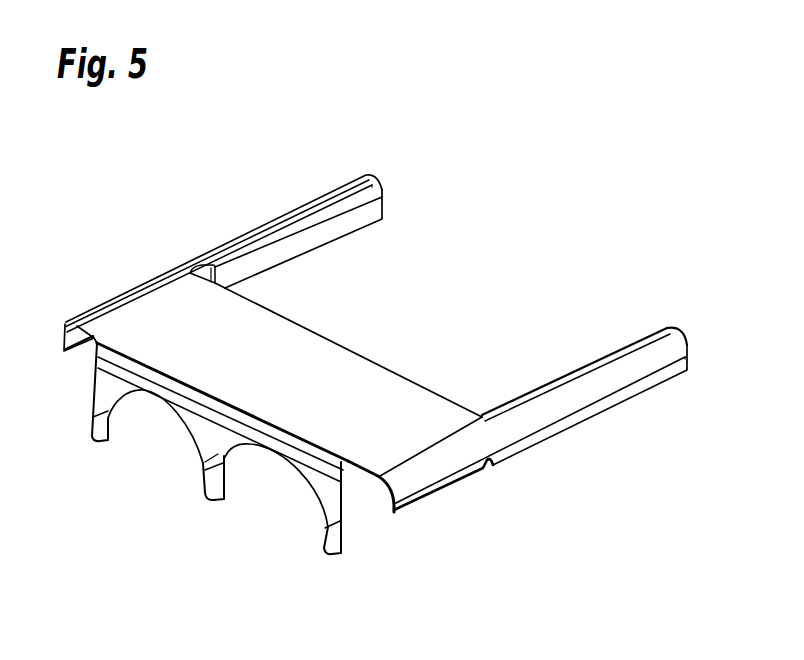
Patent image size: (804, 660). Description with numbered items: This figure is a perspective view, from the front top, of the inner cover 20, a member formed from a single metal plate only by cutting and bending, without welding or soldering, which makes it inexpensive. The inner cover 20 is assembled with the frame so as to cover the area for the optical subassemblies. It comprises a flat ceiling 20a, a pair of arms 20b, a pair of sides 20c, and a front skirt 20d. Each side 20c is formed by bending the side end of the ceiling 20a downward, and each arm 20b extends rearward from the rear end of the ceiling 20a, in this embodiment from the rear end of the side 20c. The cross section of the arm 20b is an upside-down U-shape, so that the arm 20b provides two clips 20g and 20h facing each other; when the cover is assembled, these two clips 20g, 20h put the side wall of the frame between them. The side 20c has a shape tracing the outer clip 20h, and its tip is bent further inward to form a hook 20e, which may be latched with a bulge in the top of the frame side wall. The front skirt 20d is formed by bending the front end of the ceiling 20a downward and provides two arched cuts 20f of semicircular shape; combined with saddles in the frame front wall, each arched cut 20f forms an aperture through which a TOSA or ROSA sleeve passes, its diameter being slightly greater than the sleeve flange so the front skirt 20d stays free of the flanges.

The inner cover 20 is at (487, 253).
The ceiling 20a is at (372, 380).
The arm 20b is at (321, 197).
The side 20c is at (63, 328).
The front skirt 20d is at (205, 464).
The hook 20e is at (78, 352).
The arched cut 20f is at (123, 423).
The clip 20g is at (363, 215).
The outer clip 20h is at (673, 372).